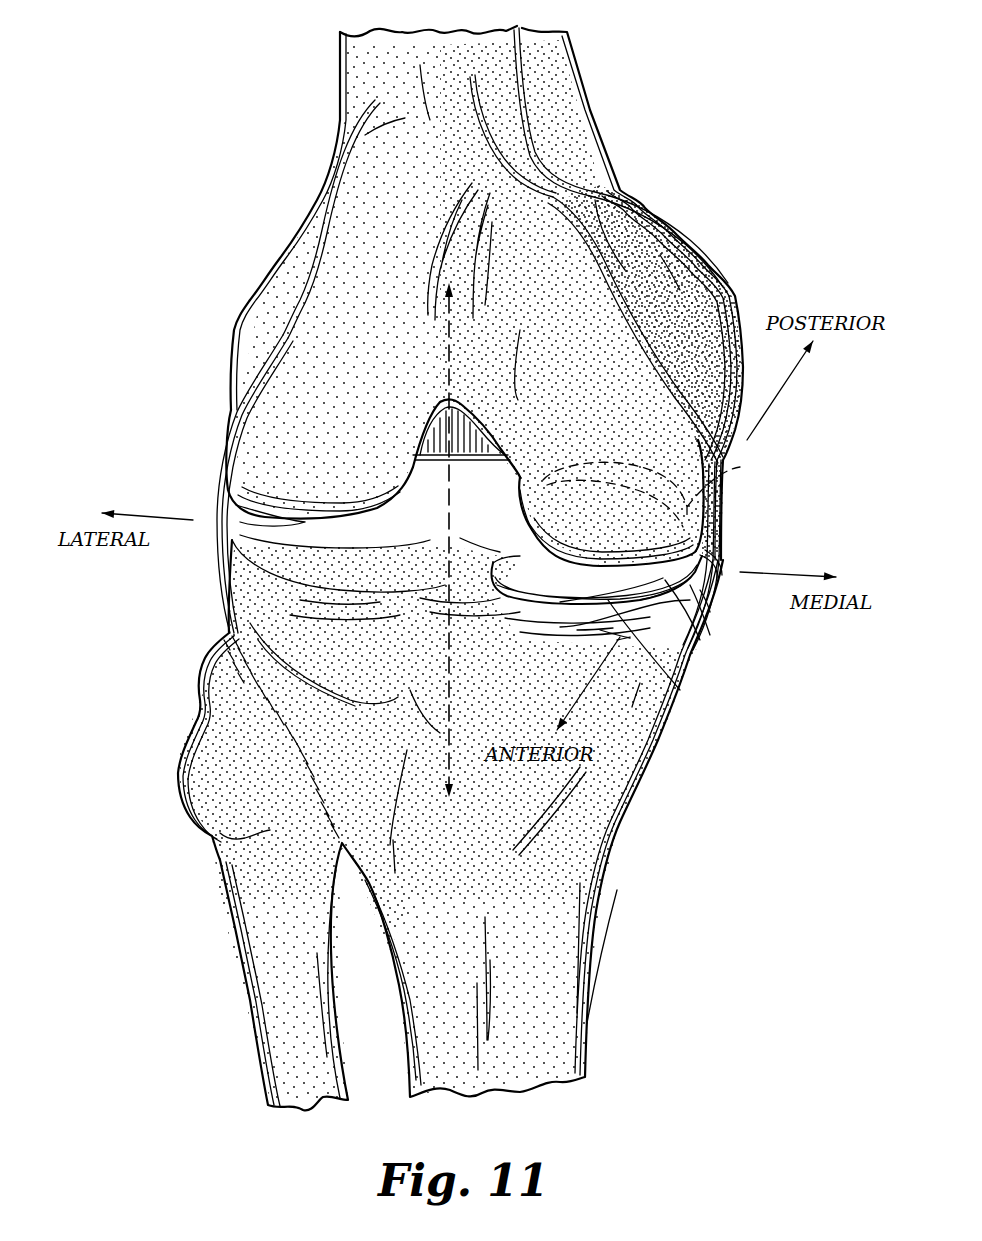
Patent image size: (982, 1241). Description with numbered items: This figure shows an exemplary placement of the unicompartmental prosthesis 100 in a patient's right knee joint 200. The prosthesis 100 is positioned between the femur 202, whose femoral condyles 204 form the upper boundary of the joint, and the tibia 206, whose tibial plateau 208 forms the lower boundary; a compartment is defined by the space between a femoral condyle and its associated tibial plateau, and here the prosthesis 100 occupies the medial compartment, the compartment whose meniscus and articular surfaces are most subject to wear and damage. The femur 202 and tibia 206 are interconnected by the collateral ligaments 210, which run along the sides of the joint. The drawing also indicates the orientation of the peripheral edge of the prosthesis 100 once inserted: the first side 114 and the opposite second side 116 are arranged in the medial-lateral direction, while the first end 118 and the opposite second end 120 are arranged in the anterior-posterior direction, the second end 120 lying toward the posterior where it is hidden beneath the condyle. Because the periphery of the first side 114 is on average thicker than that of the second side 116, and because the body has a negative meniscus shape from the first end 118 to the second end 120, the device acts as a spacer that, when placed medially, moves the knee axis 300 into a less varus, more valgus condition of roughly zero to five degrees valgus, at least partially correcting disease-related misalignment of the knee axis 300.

The prosthesis 100 is at (505, 593).
The first side 114 is at (677, 580).
The second side 116 is at (530, 514).
The first end 118 is at (620, 637).
The second end 120 is at (727, 463).
The right knee joint 200 is at (183, 415).
The femur 202 is at (565, 120).
The femoral condyles 204 is at (255, 518).
The tibia 206 is at (608, 795).
The tibial plateau 208 is at (710, 618).
The collateral ligaments 210 is at (220, 568).
The knee axis 300 is at (447, 336).